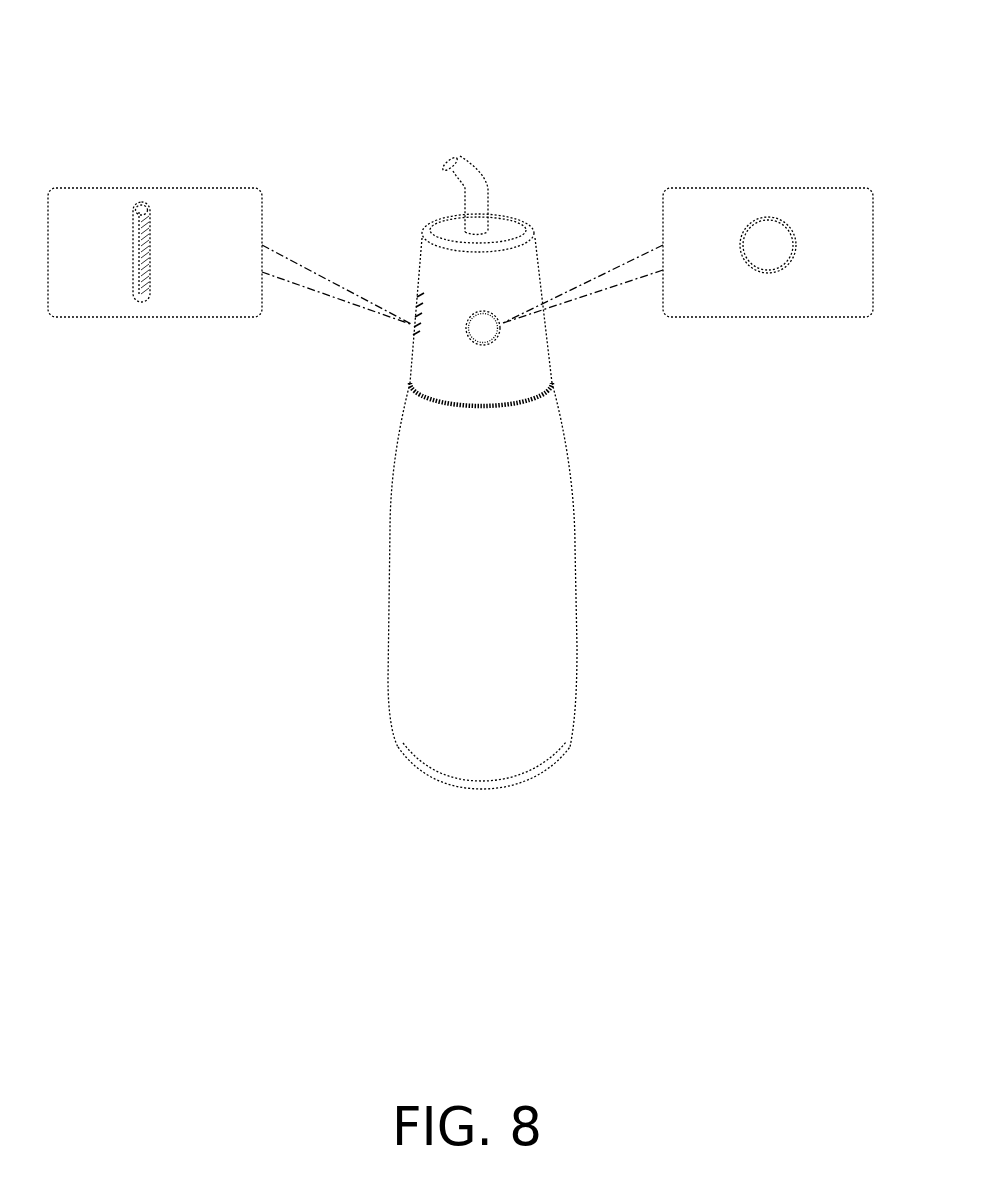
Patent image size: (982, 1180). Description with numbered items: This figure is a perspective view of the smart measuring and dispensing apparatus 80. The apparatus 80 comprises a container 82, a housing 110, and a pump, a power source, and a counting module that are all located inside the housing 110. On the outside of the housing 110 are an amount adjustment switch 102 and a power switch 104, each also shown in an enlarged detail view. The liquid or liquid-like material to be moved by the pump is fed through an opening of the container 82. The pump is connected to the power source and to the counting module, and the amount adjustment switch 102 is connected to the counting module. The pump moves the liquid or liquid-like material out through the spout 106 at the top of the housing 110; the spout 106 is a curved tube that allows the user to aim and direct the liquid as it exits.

The apparatus 80 is at (250, 31).
The container 82 is at (423, 573).
The amount adjustment switch 102 is at (137, 258).
The power switch 104 is at (778, 252).
The spout 106 is at (478, 192).
The housing 110 is at (527, 350).